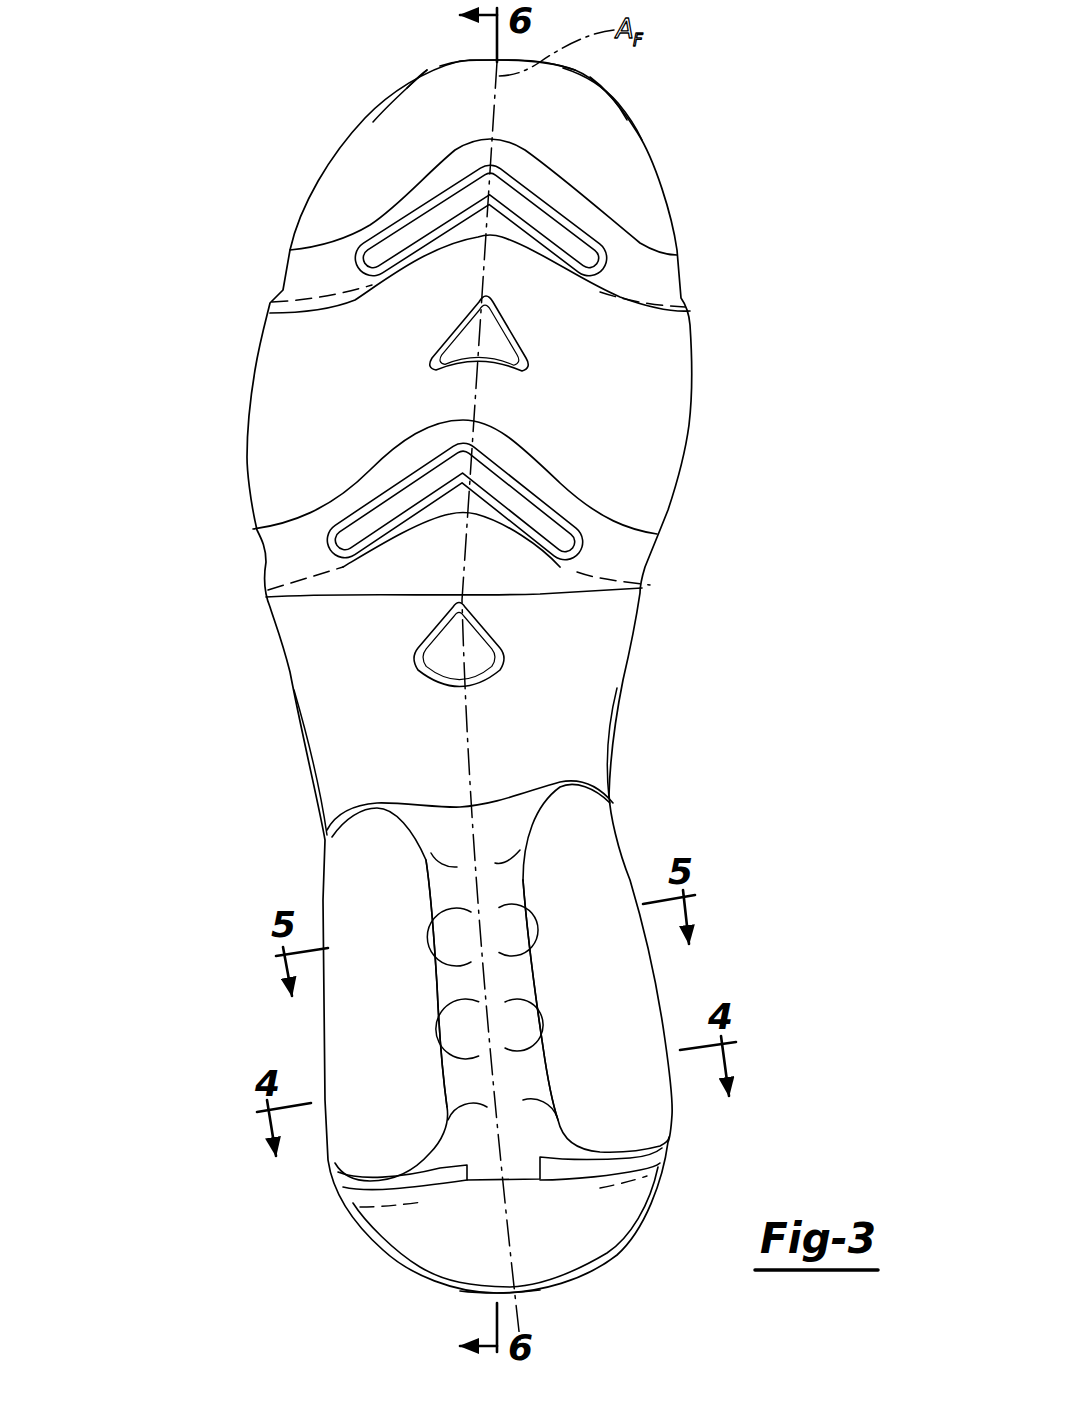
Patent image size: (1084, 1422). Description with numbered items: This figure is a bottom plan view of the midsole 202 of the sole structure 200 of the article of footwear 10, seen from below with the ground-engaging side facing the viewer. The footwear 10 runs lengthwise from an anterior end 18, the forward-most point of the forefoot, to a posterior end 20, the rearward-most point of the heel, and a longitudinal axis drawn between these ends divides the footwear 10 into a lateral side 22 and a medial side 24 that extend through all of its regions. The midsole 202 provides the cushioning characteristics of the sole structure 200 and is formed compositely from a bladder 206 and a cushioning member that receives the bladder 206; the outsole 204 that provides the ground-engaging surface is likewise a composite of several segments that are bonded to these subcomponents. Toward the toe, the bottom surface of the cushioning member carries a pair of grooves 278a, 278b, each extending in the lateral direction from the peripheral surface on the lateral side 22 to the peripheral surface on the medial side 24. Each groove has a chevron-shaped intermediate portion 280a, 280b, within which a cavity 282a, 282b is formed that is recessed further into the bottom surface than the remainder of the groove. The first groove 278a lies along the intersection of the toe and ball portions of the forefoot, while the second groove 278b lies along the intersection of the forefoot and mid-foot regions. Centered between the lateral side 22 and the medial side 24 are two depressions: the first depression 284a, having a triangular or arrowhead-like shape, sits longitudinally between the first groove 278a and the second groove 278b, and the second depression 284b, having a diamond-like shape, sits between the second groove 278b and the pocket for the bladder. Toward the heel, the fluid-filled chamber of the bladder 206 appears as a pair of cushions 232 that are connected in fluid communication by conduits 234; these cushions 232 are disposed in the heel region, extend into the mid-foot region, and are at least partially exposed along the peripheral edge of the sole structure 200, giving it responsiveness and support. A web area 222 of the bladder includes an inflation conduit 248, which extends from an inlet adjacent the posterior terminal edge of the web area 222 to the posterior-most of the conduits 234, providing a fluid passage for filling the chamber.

The article of footwear 10 is at (168, 216).
The anterior end 18 is at (497, 60).
The posterior end 20 is at (514, 1297).
The lateral side 22 is at (222, 757).
The medial side 24 is at (660, 680).
The sole structure 200 is at (252, 366).
The midsole 202 is at (262, 556).
The outsole 204 is at (310, 650).
The bladder 206 is at (320, 1023).
The web area 222 is at (527, 1023).
The cushions 232 is at (340, 1047).
The conduits 234 is at (503, 977).
The inflation conduit 248 is at (468, 1166).
The first groove 278a is at (652, 285).
The second groove 278b is at (622, 563).
The chevron-shaped intermediate portion of first groove 280a is at (540, 180).
The chevron-shaped intermediate portion of second groove 280b is at (548, 470).
The cavity of first groove 282a is at (557, 217).
The cavity of second groove 282b is at (533, 500).
The first depression 284a is at (503, 347).
The second depression 284b is at (478, 660).